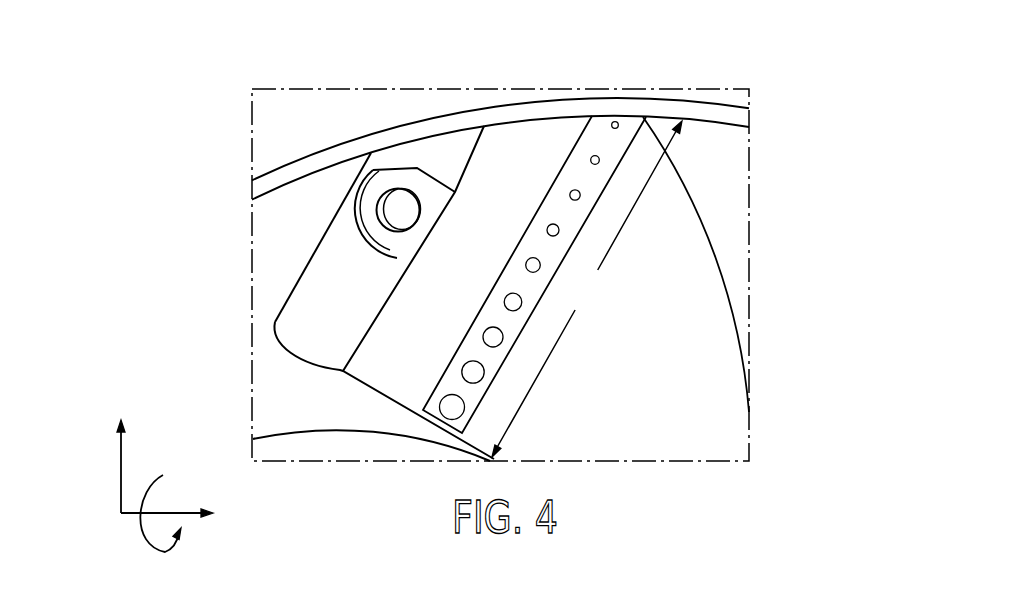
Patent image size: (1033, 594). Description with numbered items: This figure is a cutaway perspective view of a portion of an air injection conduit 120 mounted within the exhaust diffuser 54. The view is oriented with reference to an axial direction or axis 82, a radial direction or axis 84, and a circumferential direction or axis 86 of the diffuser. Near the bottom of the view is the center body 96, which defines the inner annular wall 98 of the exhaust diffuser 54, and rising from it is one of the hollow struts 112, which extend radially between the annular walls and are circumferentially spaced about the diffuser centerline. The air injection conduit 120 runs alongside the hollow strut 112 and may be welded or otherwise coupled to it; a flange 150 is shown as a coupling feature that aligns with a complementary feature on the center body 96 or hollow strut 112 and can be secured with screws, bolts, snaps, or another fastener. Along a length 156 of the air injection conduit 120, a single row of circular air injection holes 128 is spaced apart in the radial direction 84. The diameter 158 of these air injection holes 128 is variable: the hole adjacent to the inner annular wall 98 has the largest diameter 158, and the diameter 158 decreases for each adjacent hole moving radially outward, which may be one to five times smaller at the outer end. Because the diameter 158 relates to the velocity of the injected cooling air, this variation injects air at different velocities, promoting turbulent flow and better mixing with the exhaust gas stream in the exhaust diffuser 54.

The exhaust diffuser 54 is at (302, 166).
The axial direction or axis 82 is at (183, 510).
The radial direction or axis 84 is at (121, 470).
The circumferential direction or axis 86 is at (150, 540).
The center body 96 is at (342, 402).
The inner annular wall 98 is at (283, 285).
The hollow strut 112 is at (313, 345).
The air injection conduit 120 is at (572, 142).
The air injection hole 128 is at (547, 230).
The flange 150 is at (403, 243).
The length of the air injection conduit 156 is at (587, 289).
The diameter of the air injection holes 158 is at (440, 395).